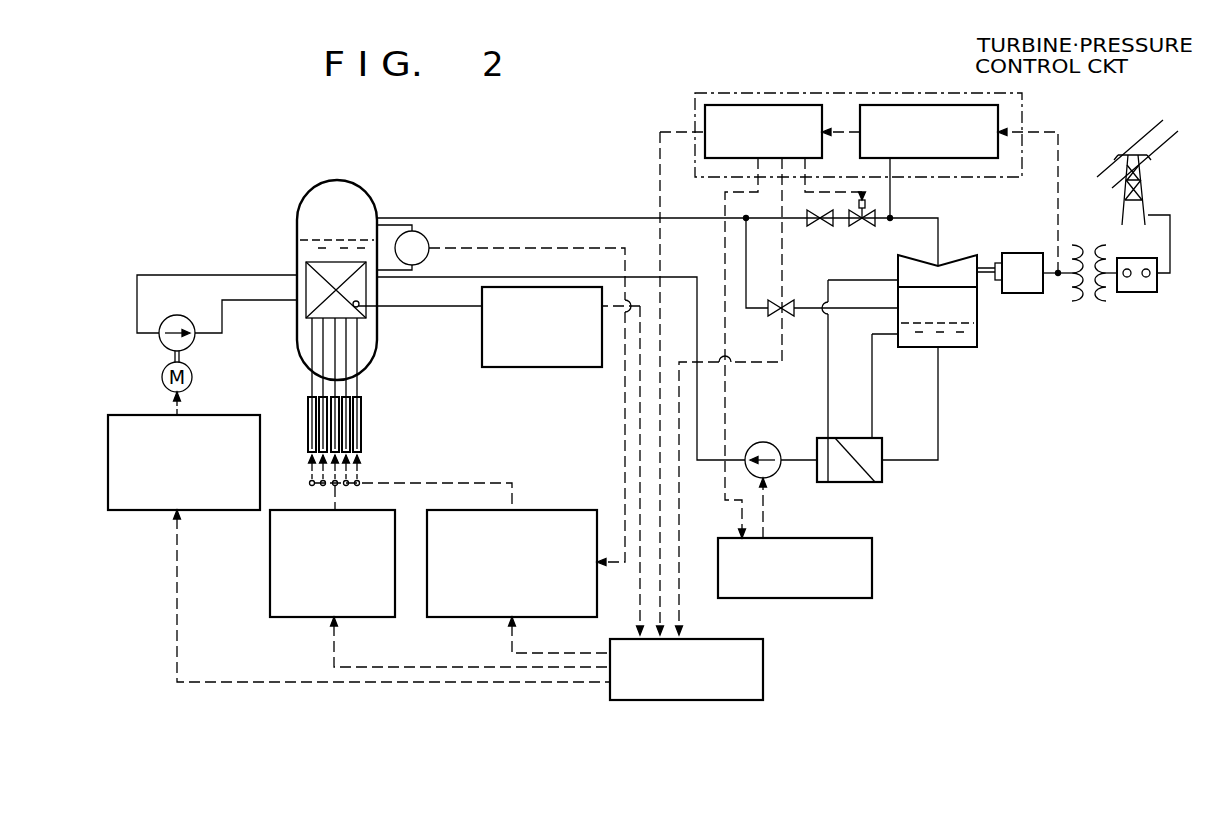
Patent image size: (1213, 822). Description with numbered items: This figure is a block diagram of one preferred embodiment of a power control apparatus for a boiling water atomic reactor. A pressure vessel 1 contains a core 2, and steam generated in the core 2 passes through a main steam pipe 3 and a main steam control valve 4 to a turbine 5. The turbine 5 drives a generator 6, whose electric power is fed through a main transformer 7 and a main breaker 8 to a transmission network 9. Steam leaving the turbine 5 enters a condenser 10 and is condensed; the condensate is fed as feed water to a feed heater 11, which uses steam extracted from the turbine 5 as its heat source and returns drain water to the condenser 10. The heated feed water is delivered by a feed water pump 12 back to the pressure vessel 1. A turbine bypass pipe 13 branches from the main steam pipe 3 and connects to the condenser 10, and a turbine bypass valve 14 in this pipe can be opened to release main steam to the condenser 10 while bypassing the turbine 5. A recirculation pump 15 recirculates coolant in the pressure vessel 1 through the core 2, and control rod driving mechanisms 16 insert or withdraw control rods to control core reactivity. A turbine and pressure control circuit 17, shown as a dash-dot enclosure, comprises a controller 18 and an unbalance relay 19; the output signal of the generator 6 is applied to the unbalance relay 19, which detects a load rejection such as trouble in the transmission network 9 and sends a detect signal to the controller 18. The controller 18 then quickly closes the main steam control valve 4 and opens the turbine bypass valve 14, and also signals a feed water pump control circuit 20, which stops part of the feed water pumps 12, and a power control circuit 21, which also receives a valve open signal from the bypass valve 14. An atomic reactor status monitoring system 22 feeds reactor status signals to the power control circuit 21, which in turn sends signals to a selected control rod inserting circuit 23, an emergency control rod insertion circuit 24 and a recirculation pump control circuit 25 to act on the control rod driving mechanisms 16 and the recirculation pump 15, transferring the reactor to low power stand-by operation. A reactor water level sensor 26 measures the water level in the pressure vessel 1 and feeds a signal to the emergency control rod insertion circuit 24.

The pressure vessel 1 is at (346, 178).
The core 2 is at (307, 260).
The main steam pipe 3 is at (514, 217).
The main steam control valve 4 is at (866, 211).
The turbine 5 is at (958, 255).
The generator 6 is at (1023, 253).
The main transformer 7 is at (1075, 302).
The main breaker 8 is at (1142, 292).
The transmission network 9 is at (1146, 184).
The condenser 10 is at (956, 348).
The feed heater 11 is at (849, 438).
The feed water pump 12 is at (764, 442).
The turbine bypass pipe 13 is at (811, 311).
The turbine bypass valve 14 is at (769, 316).
The recirculation pump 15 is at (180, 315).
The control rod driving mechanisms 16 is at (363, 419).
The turbine and pressure control circuit 17 is at (882, 92).
The controller 18 is at (752, 105).
The unbalance relay 19 is at (925, 105).
The feed water pump control circuit 20 is at (801, 538).
The power control circuit 21 is at (763, 657).
The atomic reactor status monitoring system 22 is at (572, 367).
The selected control rod inserting circuit 23 is at (292, 617).
The emergency control rod insertion circuit 24 is at (444, 617).
The recirculation pump control circuit 25 is at (217, 510).
The reactor water level sensor 26 is at (418, 231).